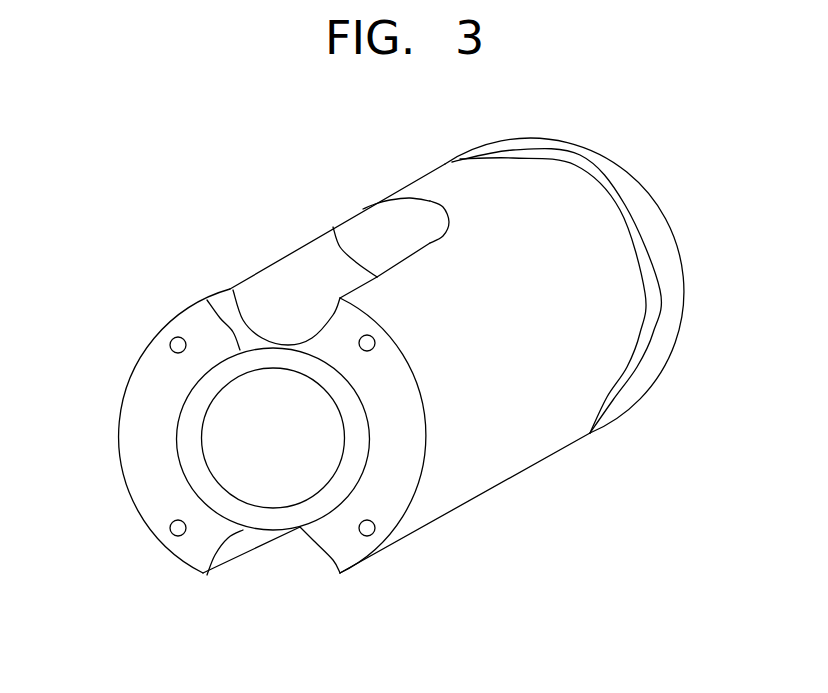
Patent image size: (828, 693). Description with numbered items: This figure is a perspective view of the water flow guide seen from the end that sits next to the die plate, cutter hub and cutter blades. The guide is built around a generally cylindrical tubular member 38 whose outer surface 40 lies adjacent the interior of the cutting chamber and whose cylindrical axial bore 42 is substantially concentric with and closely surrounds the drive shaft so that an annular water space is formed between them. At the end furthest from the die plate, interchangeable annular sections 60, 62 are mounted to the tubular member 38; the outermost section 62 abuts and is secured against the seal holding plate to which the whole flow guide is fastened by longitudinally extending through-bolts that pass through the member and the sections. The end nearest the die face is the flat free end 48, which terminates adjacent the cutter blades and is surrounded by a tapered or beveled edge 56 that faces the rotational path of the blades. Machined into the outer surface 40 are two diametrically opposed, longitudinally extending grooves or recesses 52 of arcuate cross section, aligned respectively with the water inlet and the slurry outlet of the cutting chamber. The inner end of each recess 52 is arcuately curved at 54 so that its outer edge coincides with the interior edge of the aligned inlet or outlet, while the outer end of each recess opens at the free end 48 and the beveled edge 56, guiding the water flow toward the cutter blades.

The cylindrical tubular member 38 is at (140, 475).
The outer surface 40 is at (523, 435).
The cylindrical axial bore 42 is at (217, 390).
The free end 48 is at (203, 487).
The grooves or recesses 52 is at (287, 267).
The arcuately curved inner end 54 is at (397, 213).
The tapered or beveled edge 56 is at (407, 487).
The annular section 60 is at (570, 175).
The outermost annular section 62 is at (675, 270).